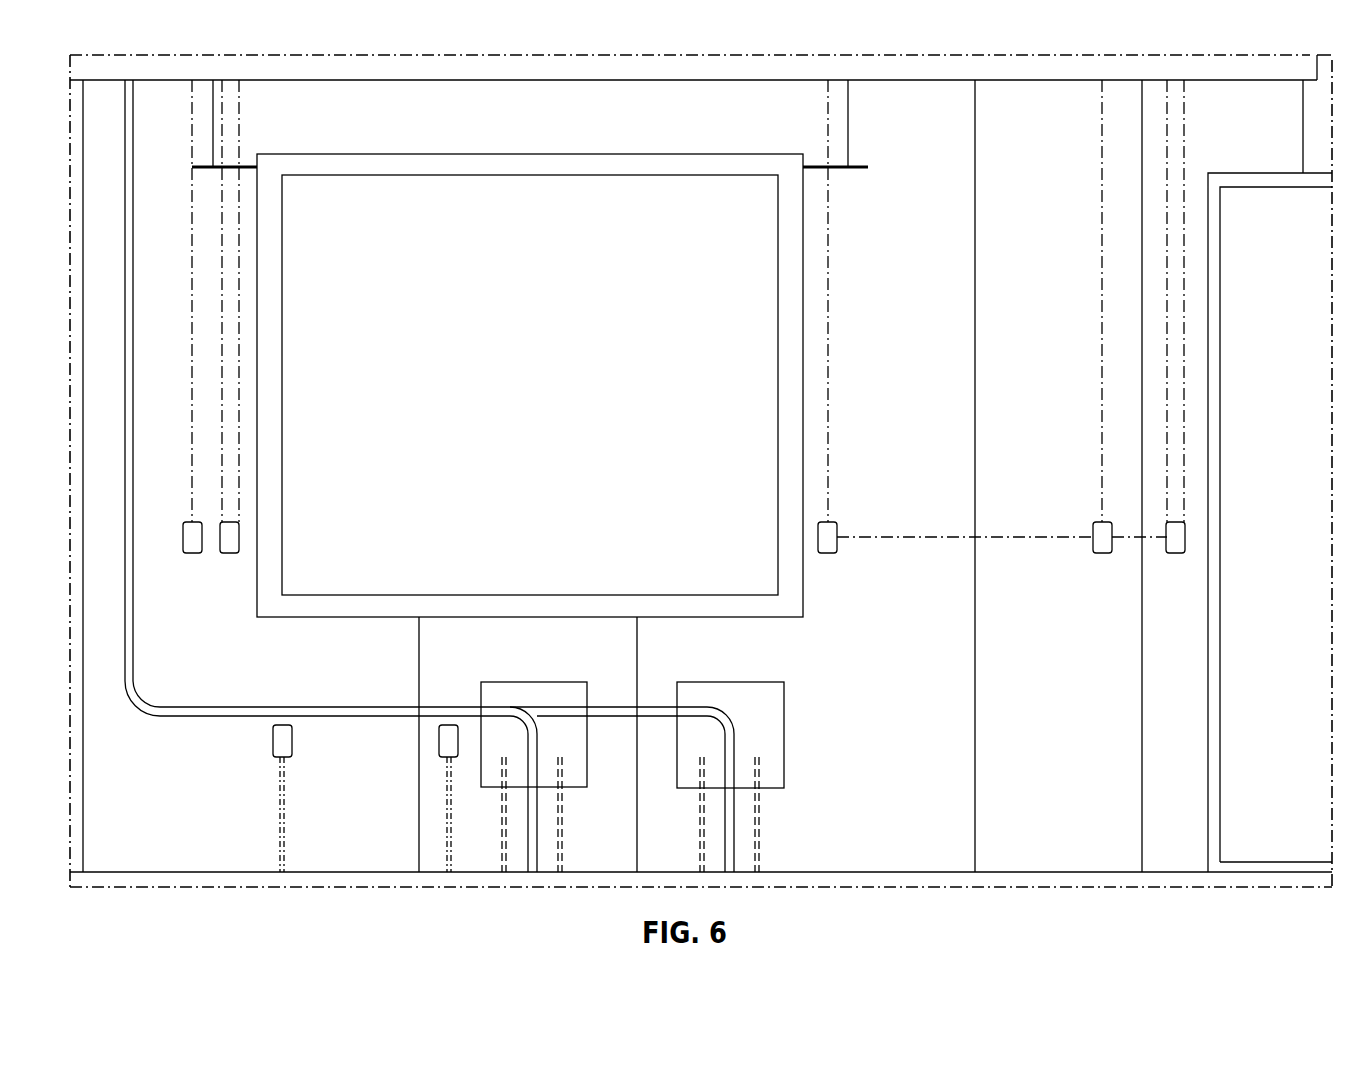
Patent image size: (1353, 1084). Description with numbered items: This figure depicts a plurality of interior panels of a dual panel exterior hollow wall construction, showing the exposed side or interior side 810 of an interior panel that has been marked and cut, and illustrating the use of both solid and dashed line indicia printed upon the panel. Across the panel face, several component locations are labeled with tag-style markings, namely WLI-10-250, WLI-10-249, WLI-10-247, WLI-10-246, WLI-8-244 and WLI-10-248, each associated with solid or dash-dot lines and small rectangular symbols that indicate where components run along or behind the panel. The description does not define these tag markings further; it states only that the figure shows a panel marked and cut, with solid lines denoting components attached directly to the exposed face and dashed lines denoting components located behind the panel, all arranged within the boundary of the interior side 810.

The exposed side or interior side of interior panel 810 is at (1074, 715).
The water leak indicator sensor WLI-10-250 is at (168, 316).
The water leak indicator sensor WLI-10-249 (equipment unit 6'0''x5'0'') WLI-10-249 is at (530, 362).
The water leak indicator sensor WLI-10-247 is at (948, 316).
The water leak indicator sensor WLI-10-246 is at (1077, 316).
The water leak indicator sensor WLI-8-244 is at (1220, 316).
The water leak indicator sensor WLI-10-248 is at (454, 476).